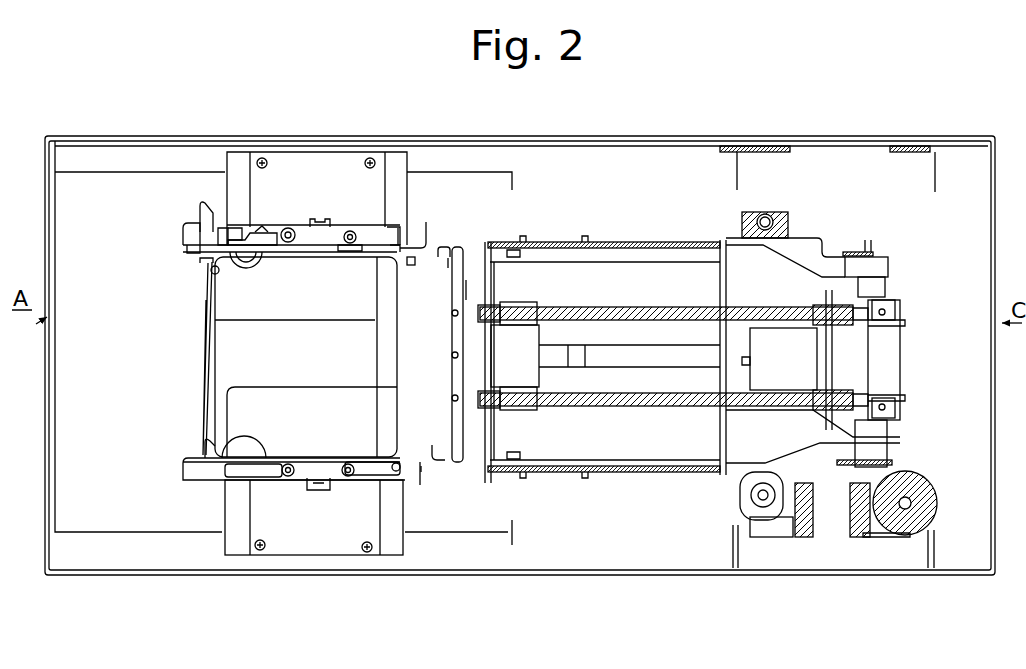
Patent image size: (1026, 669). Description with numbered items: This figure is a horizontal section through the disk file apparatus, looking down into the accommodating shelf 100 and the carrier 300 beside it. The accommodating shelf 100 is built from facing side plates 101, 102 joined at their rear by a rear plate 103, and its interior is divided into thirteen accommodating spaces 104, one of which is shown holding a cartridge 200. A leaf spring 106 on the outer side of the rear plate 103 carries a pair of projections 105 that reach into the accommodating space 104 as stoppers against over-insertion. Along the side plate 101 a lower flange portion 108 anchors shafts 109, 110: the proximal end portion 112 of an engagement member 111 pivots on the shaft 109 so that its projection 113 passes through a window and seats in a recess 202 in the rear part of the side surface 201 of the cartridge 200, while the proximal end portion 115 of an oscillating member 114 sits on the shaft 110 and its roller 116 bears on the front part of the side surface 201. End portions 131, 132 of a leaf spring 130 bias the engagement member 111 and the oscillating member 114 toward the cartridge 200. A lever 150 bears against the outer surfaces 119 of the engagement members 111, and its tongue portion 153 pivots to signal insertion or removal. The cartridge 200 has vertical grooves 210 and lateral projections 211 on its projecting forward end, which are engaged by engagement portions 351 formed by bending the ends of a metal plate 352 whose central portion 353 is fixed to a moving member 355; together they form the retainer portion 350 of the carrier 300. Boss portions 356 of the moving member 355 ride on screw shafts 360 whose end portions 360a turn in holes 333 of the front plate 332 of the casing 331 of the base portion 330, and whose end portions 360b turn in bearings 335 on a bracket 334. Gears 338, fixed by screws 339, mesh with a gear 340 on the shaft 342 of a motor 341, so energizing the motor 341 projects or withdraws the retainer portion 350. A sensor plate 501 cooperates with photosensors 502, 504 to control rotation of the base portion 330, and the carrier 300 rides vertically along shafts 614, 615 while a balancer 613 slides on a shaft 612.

The accommodating shelf 100 is at (188, 388).
The side plate 101 is at (336, 228).
The side plate 102 is at (303, 481).
The rear plate 103 is at (207, 327).
The accommodating space 104 is at (381, 456).
The projection 105 is at (208, 272).
The leaf spring 106 is at (205, 370).
The flange portion 108 is at (183, 233).
The shaft 109 is at (289, 228).
The shaft 110 is at (353, 230).
The engagement member 111 is at (265, 237).
The proximal end portion 112 is at (320, 218).
The projection 113 is at (247, 259).
The oscillating member 114 is at (394, 226).
The proximal end portion 115 is at (347, 247).
The roller 116 is at (396, 253).
The outer surface 119 is at (227, 228).
The leaf spring 130 is at (380, 240).
The end portion 131 is at (262, 226).
The end portion 132 is at (398, 230).
The lever 150 is at (224, 232).
The tongue portion 153 is at (198, 207).
The cartridge 200 is at (440, 407).
The side surface 201 is at (421, 258).
The recess 202 is at (230, 261).
The vertical groove 210 is at (416, 265).
The lateral projection 211 is at (449, 250).
The carrier 300 is at (834, 244).
The base portion 330 is at (628, 242).
The casing 331 is at (626, 474).
The front plate 332 is at (487, 425).
The hole 333 is at (480, 312).
The bracket 334 is at (805, 431).
The bearing 335 is at (818, 306).
The gear 338 is at (853, 332).
The screw 339 is at (902, 322).
The gear 340 is at (823, 354).
The motor 341 is at (808, 381).
The shaft 342 is at (845, 360).
The retainer portion 350 is at (492, 285).
The engagement portion 351 is at (448, 268).
The metal plate 352 is at (469, 287).
The central portion 353 is at (452, 353).
The moving member 355 is at (535, 373).
The boss portion 356 is at (536, 318).
The screw shaft 360 is at (671, 307).
The end portion 360a is at (525, 303).
The end portion 360b is at (853, 308).
The sensor plate 501 is at (888, 275).
The photosensor 502 is at (873, 256).
The photosensor 504 is at (887, 458).
The shaft 612 is at (903, 509).
The balancer 613 is at (917, 530).
The shaft 614 is at (765, 214).
The shaft 615 is at (751, 495).